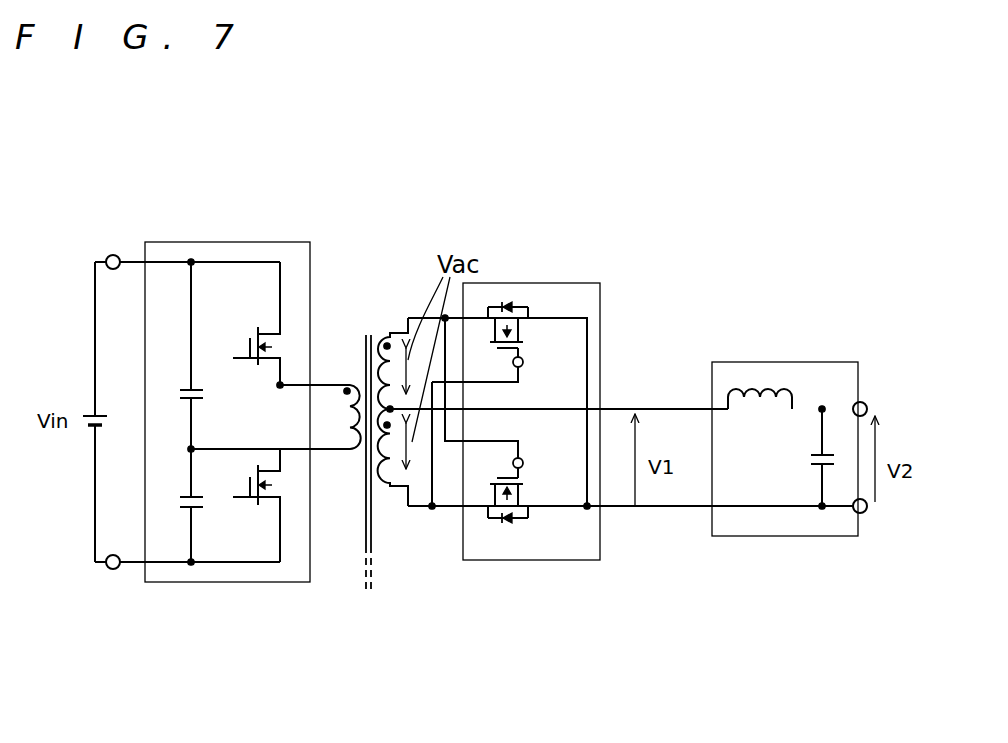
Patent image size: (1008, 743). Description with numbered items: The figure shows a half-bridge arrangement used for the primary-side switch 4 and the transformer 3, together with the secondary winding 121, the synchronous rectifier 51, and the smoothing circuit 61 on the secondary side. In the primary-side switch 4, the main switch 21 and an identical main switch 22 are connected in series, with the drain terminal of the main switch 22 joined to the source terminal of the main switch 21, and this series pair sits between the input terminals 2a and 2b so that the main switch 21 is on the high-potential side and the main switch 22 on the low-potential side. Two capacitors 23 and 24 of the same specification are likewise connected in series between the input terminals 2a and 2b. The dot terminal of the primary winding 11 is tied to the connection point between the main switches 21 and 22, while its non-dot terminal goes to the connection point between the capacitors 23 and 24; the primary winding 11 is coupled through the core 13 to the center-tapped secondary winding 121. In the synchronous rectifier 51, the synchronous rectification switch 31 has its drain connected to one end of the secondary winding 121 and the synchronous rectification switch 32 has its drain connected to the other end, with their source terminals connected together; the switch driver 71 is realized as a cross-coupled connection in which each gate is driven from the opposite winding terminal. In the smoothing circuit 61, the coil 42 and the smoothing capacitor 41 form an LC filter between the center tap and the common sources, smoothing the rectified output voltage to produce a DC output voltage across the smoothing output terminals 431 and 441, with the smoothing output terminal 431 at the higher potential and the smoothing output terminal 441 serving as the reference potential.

The input terminal 2a is at (113, 255).
The input terminal 2b is at (113, 570).
The transformer 3 is at (371, 405).
The primary-side switch 4 is at (243, 240).
The primary winding 11 is at (348, 380).
The secondary winding 121 is at (404, 364).
The switch driver 71 is at (390, 334).
The core 13 is at (365, 541).
The main switch 21 is at (271, 331).
The main switch 22 is at (271, 500).
The capacitor 23 is at (188, 388).
The capacitor 24 is at (190, 494).
The synchronous rectification switch 31 is at (526, 332).
The synchronous rectification switch 32 is at (526, 491).
The smoothing capacitor 41 is at (820, 452).
The coil 42 is at (745, 400).
The smoothing output terminal 431 is at (864, 402).
The smoothing output terminal 441 is at (863, 514).
The synchronous rectifier 51 is at (533, 281).
The smoothing circuit 61 is at (791, 360).